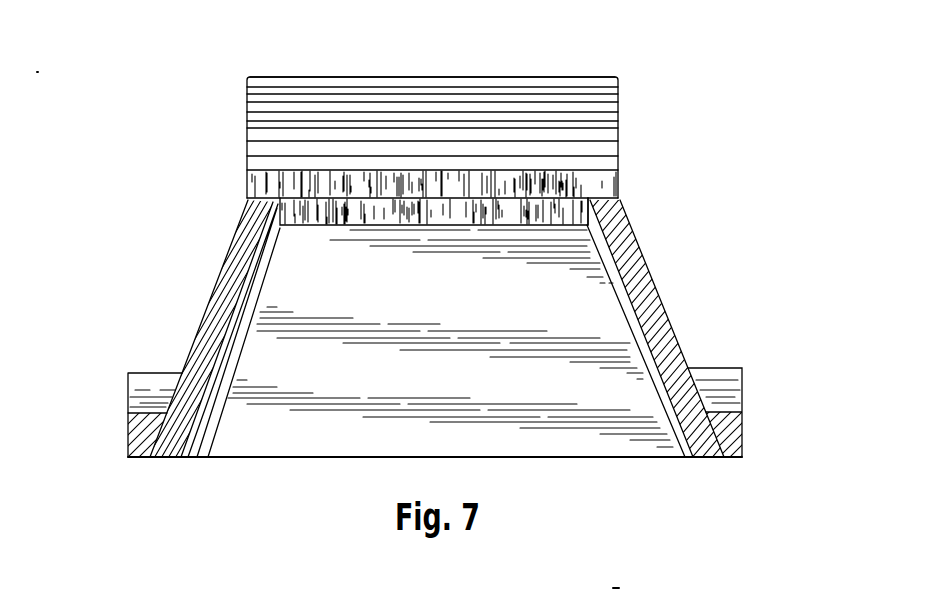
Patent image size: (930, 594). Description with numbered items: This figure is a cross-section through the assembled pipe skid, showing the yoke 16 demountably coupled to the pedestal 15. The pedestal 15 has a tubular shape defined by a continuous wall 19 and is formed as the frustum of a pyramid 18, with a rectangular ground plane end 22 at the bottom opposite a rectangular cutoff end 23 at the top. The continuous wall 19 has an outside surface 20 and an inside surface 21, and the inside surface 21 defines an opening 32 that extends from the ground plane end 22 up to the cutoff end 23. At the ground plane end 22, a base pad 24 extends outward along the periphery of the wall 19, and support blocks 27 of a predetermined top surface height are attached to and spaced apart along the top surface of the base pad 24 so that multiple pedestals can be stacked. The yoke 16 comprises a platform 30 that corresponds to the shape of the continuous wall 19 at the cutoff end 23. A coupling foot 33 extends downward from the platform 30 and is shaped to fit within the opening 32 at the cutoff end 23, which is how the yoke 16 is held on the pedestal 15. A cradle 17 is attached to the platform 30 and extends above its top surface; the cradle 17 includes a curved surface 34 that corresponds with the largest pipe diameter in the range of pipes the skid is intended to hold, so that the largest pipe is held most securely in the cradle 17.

The pedestal 15 is at (710, 303).
The yoke 16 is at (647, 87).
The cradle 17 is at (303, 77).
The frustum of a pyramid 18 is at (638, 248).
The continuous wall 19 is at (203, 320).
The outside surface 20 is at (220, 272).
The inside surface 21 is at (247, 280).
The ground plane end 22 is at (337, 480).
The cutoff end 23 is at (530, 237).
The base pad 24 is at (133, 435).
The support blocks 27 is at (135, 393).
The platform 30 is at (255, 187).
The opening 32 is at (561, 436).
The coupling foot 33 is at (482, 218).
The curved surface 34 is at (350, 110).